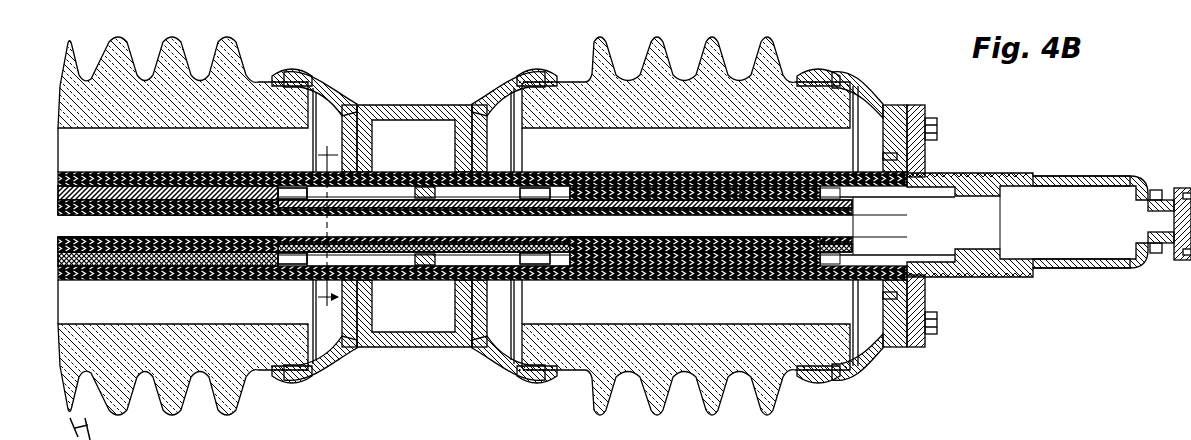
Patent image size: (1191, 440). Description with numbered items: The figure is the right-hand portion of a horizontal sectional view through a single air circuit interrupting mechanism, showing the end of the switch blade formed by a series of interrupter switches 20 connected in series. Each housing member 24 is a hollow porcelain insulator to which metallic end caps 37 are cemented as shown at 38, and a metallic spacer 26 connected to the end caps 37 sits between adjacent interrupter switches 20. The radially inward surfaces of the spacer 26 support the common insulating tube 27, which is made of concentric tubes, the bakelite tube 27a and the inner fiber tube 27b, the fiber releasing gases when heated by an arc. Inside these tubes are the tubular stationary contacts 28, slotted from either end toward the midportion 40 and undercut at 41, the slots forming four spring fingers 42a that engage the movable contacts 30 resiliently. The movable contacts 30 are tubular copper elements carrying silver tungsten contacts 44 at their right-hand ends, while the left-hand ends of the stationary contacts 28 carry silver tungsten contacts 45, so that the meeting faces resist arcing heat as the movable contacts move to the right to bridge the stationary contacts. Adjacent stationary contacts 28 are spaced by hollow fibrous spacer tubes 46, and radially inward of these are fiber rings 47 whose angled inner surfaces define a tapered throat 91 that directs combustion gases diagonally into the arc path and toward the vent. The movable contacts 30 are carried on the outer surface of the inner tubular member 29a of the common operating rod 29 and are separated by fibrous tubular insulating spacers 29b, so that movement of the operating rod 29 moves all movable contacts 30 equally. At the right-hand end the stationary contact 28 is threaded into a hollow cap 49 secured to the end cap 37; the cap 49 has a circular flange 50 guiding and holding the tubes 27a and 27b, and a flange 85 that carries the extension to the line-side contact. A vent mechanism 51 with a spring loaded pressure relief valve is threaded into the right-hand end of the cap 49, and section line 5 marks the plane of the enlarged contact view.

The section line 5 is at (328, 228).
The interrupter switch 20 is at (246, 58).
The housing member 24 is at (604, 56).
The spacer 26 is at (390, 107).
The insulating tube 27 is at (617, 171).
The bakelite tube 27a is at (745, 173).
The fiber tube 27b is at (820, 170).
The stationary contact 28 is at (423, 187).
The operating rod 29 is at (218, 220).
The inner tubular member 29a is at (277, 210).
The tubular insulating spacer 29b is at (135, 210).
The movable contact 30 is at (338, 155).
The end cap 37 is at (308, 91).
The cement 38 is at (291, 74).
The midportion 40 is at (448, 203).
The undercut 41 is at (373, 238).
The spring finger 42a is at (512, 206).
The silver tungsten contact 44 is at (569, 241).
The silver tungsten contact 45 is at (268, 173).
The spacer tube 46 is at (201, 173).
The fiber ring 47 is at (124, 160).
The hollow cap 49 is at (1033, 178).
The circular flange 50 is at (897, 158).
The vent mechanism 51 is at (1171, 262).
The flange 85 is at (920, 157).
The tapered throat 91 is at (104, 242).